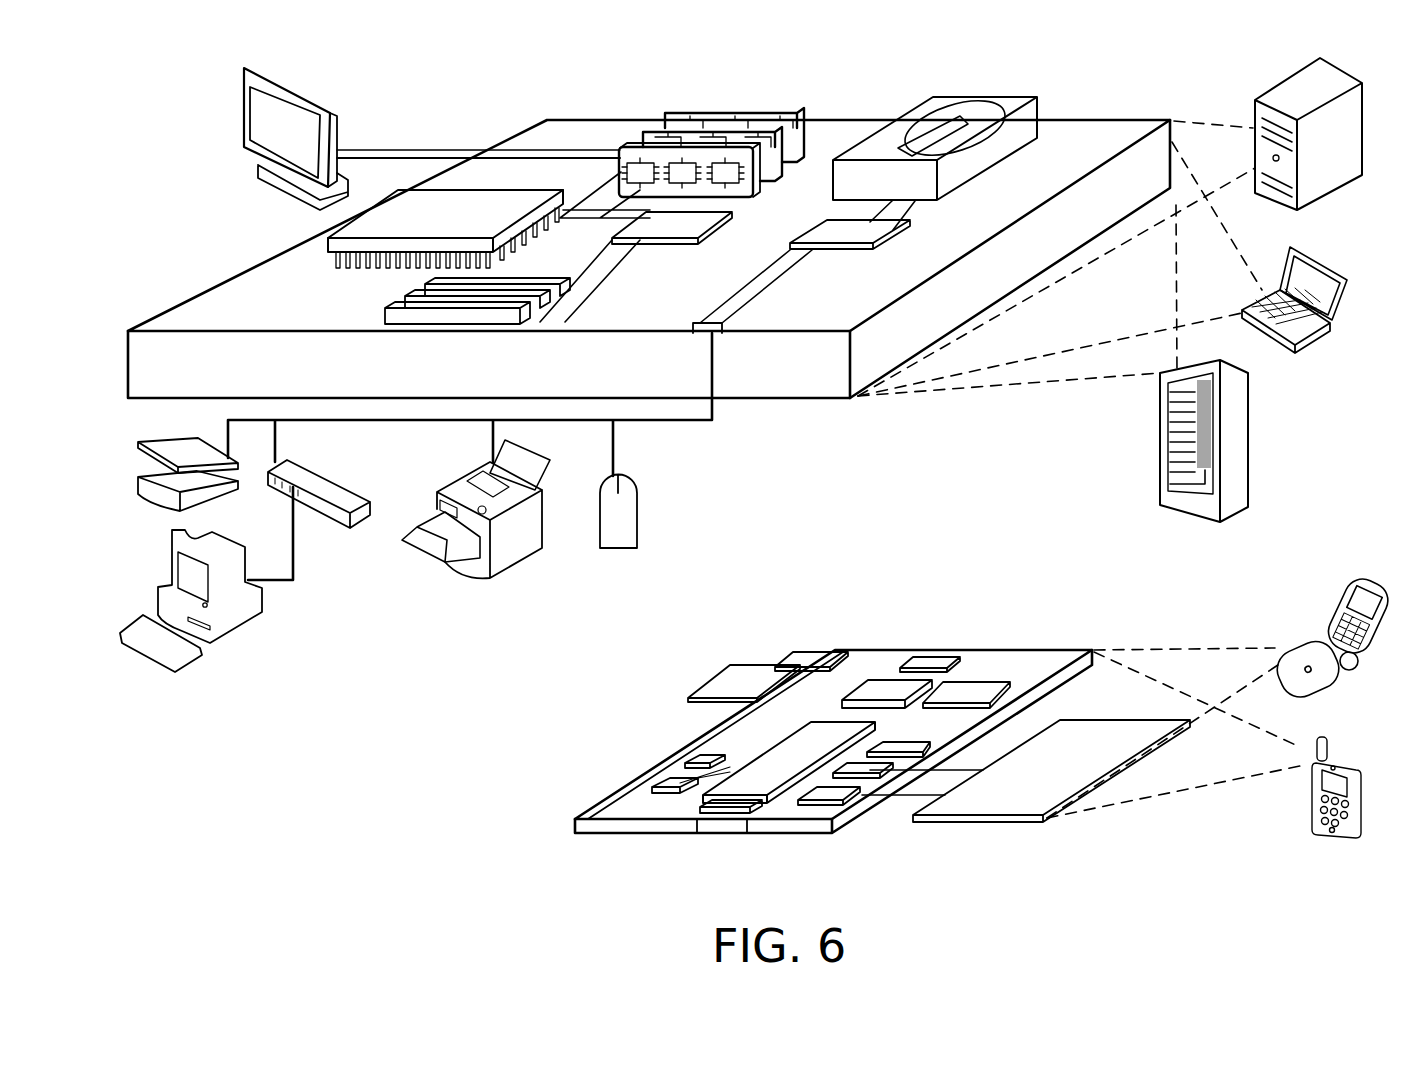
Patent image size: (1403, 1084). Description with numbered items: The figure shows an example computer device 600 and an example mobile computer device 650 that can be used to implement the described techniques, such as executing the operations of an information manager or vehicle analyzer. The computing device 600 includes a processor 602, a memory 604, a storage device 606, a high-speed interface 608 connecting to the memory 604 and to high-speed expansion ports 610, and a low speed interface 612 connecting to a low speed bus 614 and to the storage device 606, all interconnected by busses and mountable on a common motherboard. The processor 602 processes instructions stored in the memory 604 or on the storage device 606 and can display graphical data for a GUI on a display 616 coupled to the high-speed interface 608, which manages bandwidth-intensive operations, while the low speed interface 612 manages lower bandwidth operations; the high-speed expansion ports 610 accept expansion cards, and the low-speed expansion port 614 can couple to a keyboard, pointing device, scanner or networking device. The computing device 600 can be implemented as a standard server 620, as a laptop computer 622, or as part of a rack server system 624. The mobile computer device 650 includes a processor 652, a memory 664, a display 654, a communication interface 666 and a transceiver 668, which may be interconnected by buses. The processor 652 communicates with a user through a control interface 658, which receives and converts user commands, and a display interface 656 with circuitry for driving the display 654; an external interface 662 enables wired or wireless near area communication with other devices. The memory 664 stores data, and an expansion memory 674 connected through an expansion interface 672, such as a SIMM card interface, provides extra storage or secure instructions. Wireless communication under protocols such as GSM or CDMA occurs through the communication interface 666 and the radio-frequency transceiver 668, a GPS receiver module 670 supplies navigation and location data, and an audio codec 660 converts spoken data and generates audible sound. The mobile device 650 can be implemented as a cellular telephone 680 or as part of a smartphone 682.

The computing device 600 is at (463, 85).
The processor 602 is at (327, 243).
The memory 604 is at (692, 112).
The storage device 606 is at (934, 106).
The high-speed interface 608 is at (647, 230).
The high-speed expansion ports 610 is at (407, 297).
The low speed interface 612 is at (848, 233).
The low-speed expansion port 614 is at (727, 335).
The display 616 is at (246, 72).
The standard server 620 is at (1258, 103).
The laptop computer 622 is at (1287, 258).
The rack server system 624 is at (1160, 468).
The mobile computer device 650 is at (984, 731).
The processor 652 is at (760, 819).
The display 654 is at (1045, 822).
The display interface 656 is at (848, 820).
The control interface 658 is at (888, 778).
The audio codec 660 is at (905, 758).
The external interface 662 is at (722, 820).
The memory 664 is at (672, 778).
The communication interface 666 is at (888, 690).
The transceiver 668 is at (967, 690).
The GPS receiver module 670 is at (930, 652).
The expansion interface 672 is at (808, 665).
The expansion memory 674 is at (735, 667).
The cellular telephone 680 is at (1340, 590).
The smartphone 682 is at (1322, 735).